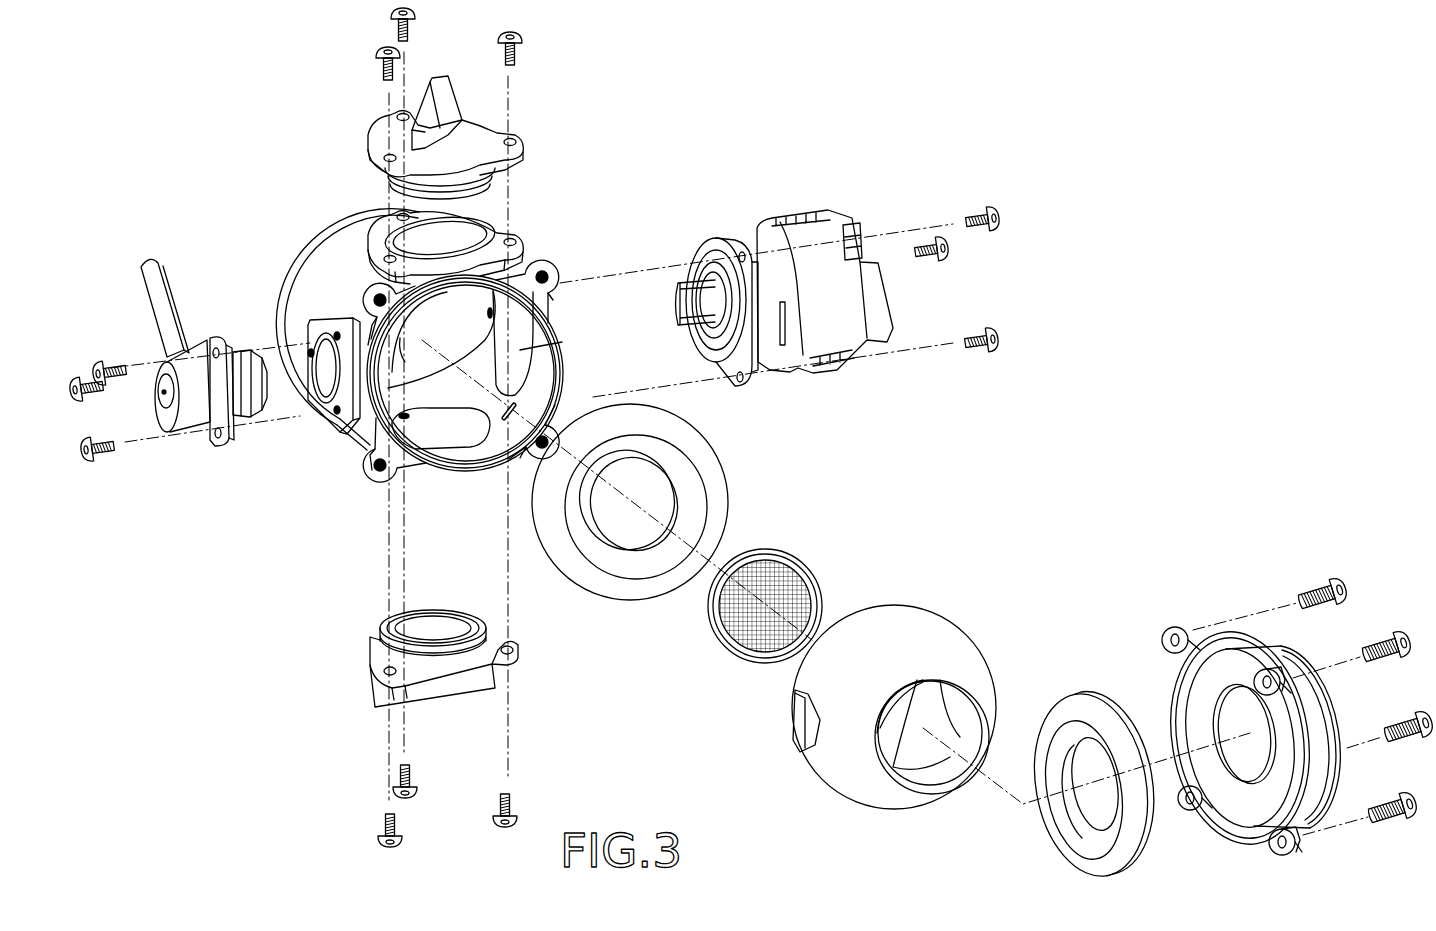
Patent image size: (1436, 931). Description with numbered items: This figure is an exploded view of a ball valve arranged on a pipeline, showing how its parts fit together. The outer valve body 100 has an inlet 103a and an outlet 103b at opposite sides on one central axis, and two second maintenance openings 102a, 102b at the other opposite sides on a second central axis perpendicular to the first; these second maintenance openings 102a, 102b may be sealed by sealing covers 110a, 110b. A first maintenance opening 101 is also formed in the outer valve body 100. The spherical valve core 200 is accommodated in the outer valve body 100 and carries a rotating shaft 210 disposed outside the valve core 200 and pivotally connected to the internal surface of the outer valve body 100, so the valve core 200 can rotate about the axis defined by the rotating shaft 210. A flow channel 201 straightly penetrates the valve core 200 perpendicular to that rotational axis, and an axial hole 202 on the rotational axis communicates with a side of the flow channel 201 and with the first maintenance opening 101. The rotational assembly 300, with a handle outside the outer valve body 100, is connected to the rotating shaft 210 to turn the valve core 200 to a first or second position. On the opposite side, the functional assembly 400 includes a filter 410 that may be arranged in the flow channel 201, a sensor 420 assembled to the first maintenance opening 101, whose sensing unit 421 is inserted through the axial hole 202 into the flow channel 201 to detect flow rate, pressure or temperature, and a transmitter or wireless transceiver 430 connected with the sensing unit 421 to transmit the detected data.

The outer valve body 100 is at (338, 285).
The first maintenance opening 101 is at (520, 350).
The second maintenance opening 102a is at (483, 222).
The second maintenance opening 102b is at (447, 452).
The inlet 103a is at (1220, 705).
The outlet 103b is at (400, 338).
The sealing cover 110a is at (475, 135).
The sealing cover 110b is at (450, 693).
The valve core 200 is at (925, 693).
The flow channel 201 is at (897, 748).
The axial hole 202 is at (948, 712).
The rotating shaft 210 is at (250, 410).
The rotational assembly 300 is at (200, 413).
The functional assembly 400 is at (776, 369).
The filter 410 is at (755, 553).
The sensor 420 is at (768, 367).
The sensing unit 421 is at (700, 303).
The wireless transceiver 430 is at (835, 365).